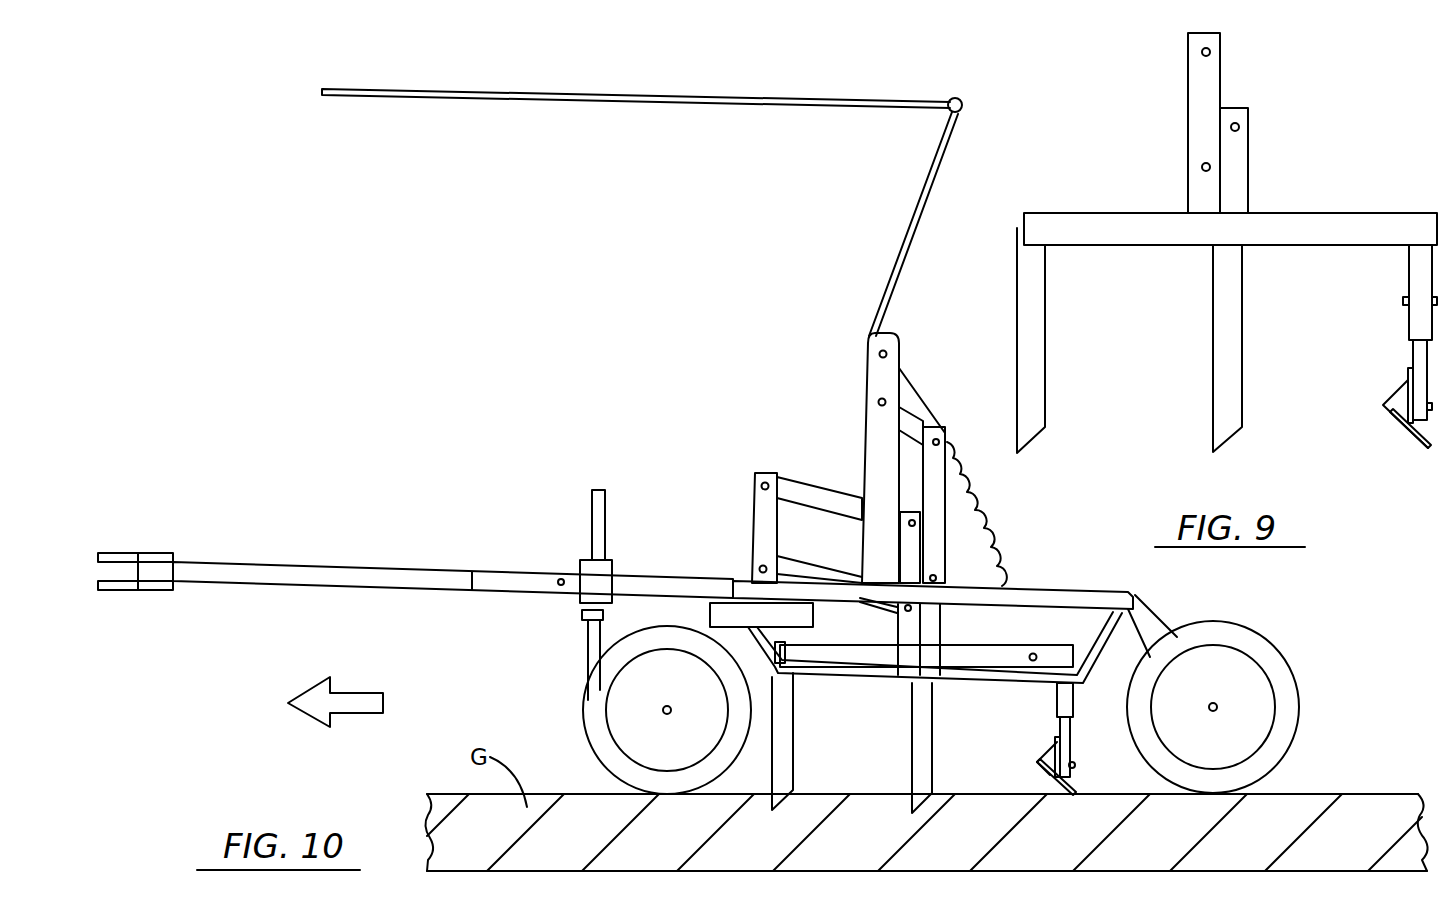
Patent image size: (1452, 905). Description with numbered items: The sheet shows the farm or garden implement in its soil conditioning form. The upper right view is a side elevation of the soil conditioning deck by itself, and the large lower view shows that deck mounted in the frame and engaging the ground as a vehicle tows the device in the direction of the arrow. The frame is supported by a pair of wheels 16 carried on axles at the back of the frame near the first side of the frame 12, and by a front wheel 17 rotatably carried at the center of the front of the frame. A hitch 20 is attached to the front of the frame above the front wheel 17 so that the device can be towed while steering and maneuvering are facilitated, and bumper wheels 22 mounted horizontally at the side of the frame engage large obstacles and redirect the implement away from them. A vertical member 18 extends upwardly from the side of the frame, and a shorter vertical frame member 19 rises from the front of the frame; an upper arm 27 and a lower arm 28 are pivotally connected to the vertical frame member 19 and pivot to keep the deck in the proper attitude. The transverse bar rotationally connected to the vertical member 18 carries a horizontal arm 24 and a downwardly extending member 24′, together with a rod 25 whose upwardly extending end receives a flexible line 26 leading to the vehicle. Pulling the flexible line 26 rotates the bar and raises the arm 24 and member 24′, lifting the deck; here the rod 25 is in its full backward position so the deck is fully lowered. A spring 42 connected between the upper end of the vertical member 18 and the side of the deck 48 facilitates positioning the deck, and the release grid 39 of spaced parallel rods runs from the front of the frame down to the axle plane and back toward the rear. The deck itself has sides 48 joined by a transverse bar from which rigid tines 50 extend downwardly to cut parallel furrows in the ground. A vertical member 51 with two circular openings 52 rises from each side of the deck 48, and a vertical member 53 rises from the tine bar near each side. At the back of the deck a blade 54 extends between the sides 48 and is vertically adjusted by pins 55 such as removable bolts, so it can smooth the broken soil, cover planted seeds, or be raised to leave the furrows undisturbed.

In FIG. 10, the first side of the frame 12 is at (1038, 595).
In FIG. 10, the wheels 16 is at (1298, 692).
In FIG. 10, the front wheel 17 is at (586, 717).
In FIG. 10, the vertical member 18 is at (878, 383).
In FIG. 10, the vertical frame members 19 is at (767, 520).
In FIG. 10, the hitch 20 is at (390, 587).
In FIG. 10, the bumper wheels 22 is at (733, 617).
In FIG. 10, the arm 24 is at (910, 423).
In FIG. 10, the member 24′ is at (937, 470).
In FIG. 10, the rod 25 is at (923, 185).
In FIG. 10, the flexible line 26 is at (727, 107).
In FIG. 10, the upper arm 27 is at (845, 505).
In FIG. 10, the lower arm 28 is at (795, 577).
In FIG. 10, the release grid 39 is at (865, 687).
In FIG. 10, the springs 42 is at (987, 530).
In FIG. 9, the sides of the deck 48 is at (1367, 213).
In FIG. 10, the sides of the deck 48 is at (1052, 655).
In FIG. 9, the rigid tines 50 is at (1030, 440).
In FIG. 10, the rigid tines 50 is at (800, 795).
In FIG. 9, the vertical members 51 is at (1200, 90).
In FIG. 10, the vertical members 51 is at (918, 532).
In FIG. 9, the circular openings 52 is at (1202, 52).
In FIG. 9, the vertical members 53 is at (1236, 150).
In FIG. 10, the vertical members 53 is at (938, 575).
In FIG. 9, the blade 54 is at (1395, 420).
In FIG. 10, the blade 54 is at (1052, 753).
In FIG. 9, the pins 55 is at (1431, 410).
In FIG. 10, the pins 55 is at (1073, 767).